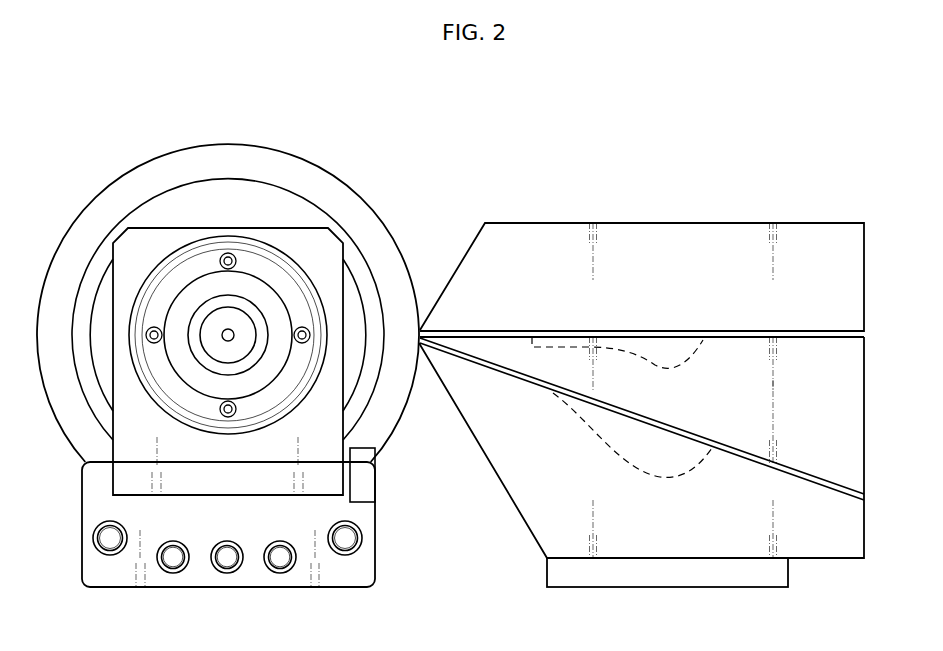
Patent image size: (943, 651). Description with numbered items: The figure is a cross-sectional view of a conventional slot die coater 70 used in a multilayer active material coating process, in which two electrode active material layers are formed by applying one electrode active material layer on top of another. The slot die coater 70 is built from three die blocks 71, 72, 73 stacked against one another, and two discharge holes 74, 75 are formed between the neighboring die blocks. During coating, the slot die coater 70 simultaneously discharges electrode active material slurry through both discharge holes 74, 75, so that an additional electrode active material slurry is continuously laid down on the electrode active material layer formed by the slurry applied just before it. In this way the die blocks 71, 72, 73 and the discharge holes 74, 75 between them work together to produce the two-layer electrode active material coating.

The slot die coater 70 is at (645, 173).
The die block 71 is at (853, 280).
The die block 72 is at (853, 409).
The die block 73 is at (853, 529).
The discharge hole 74 is at (443, 345).
The discharge hole 75 is at (443, 333).